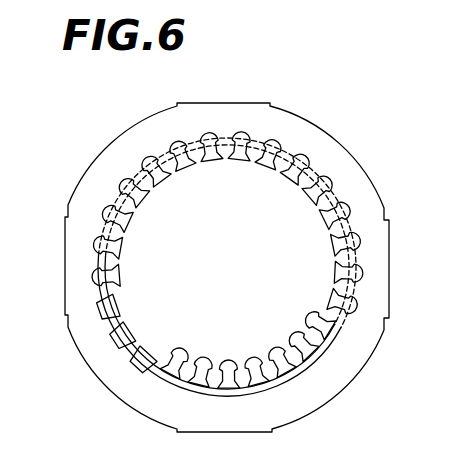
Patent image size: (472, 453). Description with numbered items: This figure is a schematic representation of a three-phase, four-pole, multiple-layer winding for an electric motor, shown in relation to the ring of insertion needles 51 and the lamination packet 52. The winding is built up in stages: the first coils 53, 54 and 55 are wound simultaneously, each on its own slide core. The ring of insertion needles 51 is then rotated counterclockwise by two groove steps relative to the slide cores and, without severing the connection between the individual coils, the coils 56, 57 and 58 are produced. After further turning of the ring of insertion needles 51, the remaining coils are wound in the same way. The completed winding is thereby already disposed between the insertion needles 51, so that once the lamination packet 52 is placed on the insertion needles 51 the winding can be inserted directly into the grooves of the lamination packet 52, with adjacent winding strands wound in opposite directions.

The insertion needles 51 is at (312, 350).
The lamination packet 52 is at (118, 390).
The first coil 53 is at (318, 364).
The first coil 54 is at (100, 270).
The first coil 55 is at (229, 134).
The coil 56 is at (200, 388).
The coil 57 is at (110, 205).
The coil 58 is at (333, 205).